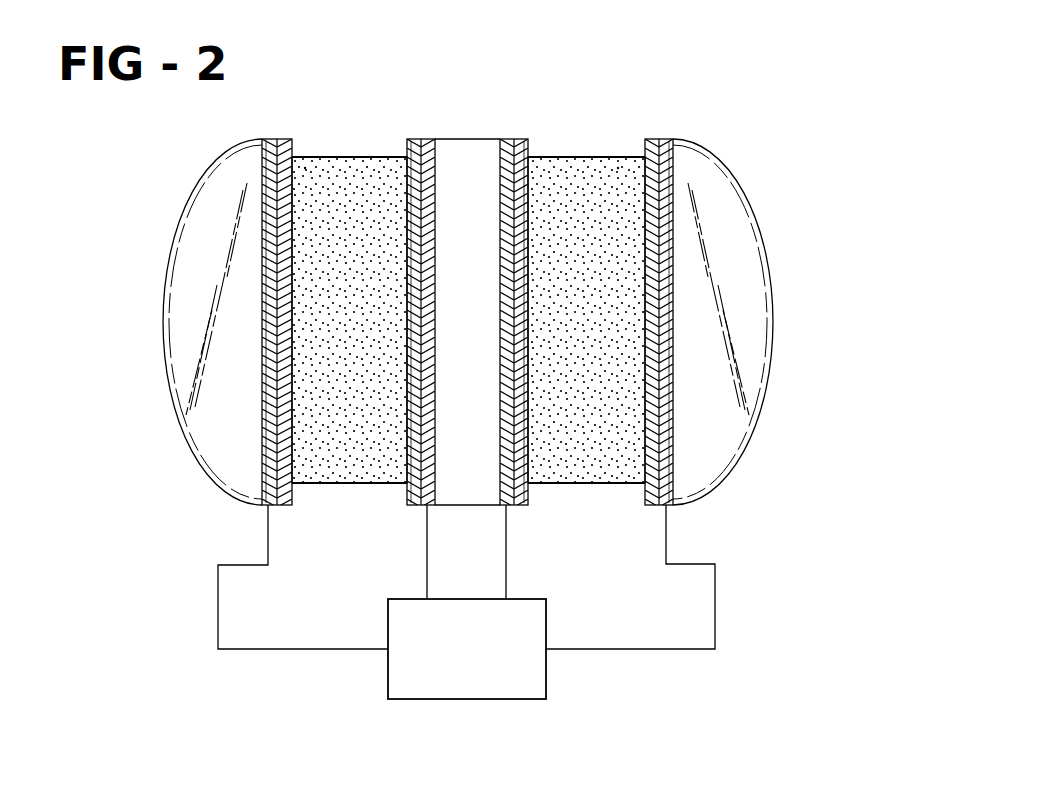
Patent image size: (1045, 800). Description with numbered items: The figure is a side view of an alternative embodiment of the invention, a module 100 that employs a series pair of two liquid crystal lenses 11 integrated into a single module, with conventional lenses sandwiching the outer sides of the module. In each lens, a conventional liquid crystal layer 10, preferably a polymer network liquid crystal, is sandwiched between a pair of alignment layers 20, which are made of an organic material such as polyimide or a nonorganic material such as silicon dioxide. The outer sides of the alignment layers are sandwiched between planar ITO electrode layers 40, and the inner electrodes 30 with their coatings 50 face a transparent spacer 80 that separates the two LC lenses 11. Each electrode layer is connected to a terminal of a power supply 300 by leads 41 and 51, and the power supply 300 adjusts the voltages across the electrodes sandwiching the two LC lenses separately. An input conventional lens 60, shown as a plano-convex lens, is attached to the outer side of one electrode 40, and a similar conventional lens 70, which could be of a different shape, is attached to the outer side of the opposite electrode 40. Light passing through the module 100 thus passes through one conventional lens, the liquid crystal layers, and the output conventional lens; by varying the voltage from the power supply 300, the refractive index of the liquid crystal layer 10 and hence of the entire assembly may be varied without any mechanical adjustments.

The electrohydrodynamic ion-drive apparatus 100 is at (614, 48).
The liquid crystal layer 10 is at (362, 156).
The LC lens 11 is at (304, 167).
The alignment layer 20 is at (280, 139).
The inner electrode 30 is at (418, 139).
The planar ITO electrode layer 40 is at (262, 139).
The lead 41 is at (268, 518).
The coating on inner electrode 50 is at (428, 139).
The lead 51 is at (427, 556).
The input conventional lens 60 is at (165, 282).
The conventional lens 70 is at (745, 197).
The transparent spacer 80 is at (452, 139).
The power supply 300 is at (455, 598).